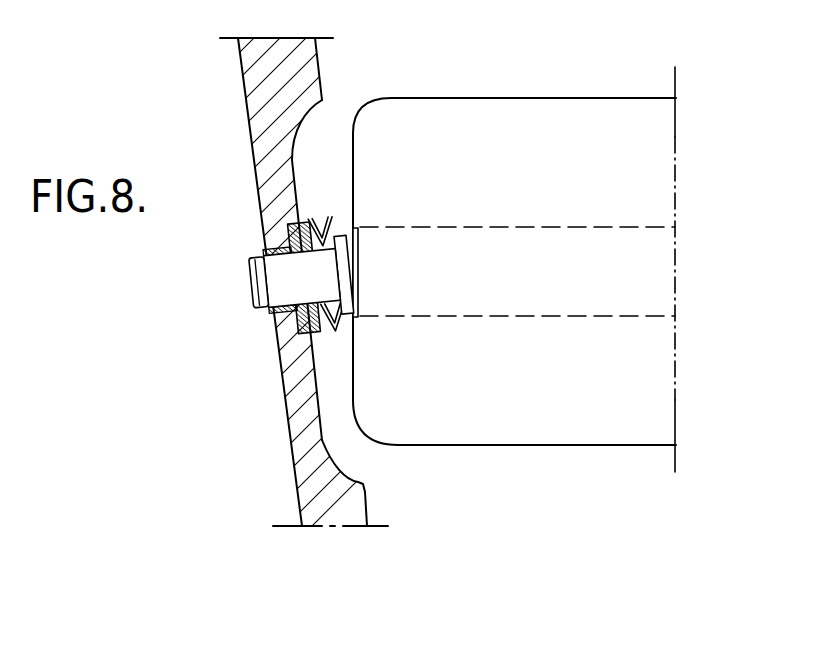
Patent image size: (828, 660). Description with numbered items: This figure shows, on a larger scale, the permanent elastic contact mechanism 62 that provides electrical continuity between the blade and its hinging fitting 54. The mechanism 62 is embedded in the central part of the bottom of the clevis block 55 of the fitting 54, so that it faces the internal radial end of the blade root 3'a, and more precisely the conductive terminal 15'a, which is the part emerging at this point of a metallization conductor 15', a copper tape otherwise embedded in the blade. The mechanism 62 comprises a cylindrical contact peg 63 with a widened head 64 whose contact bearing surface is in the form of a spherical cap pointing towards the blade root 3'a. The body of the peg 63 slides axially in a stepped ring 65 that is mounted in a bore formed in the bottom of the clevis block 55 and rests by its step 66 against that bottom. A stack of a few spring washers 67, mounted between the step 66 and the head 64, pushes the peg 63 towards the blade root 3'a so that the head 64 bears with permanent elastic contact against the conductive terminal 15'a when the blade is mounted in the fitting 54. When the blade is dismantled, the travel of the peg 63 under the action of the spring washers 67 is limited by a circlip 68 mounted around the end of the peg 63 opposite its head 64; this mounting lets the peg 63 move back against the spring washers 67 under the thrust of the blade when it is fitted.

The fitting 54 is at (338, 65).
The clevis block 55 is at (348, 508).
The permanent elastic contact mechanism 62 is at (320, 188).
The contact peg 63 is at (295, 283).
The head 64 is at (350, 280).
The stepped ring 65 is at (287, 238).
The step 66 is at (317, 217).
The spring washers 67 is at (343, 332).
The circlip 68 is at (270, 310).
The metallization conductor 15' is at (543, 269).
The conductive terminal 15'a is at (439, 244).
The blade root 3'a is at (514, 452).